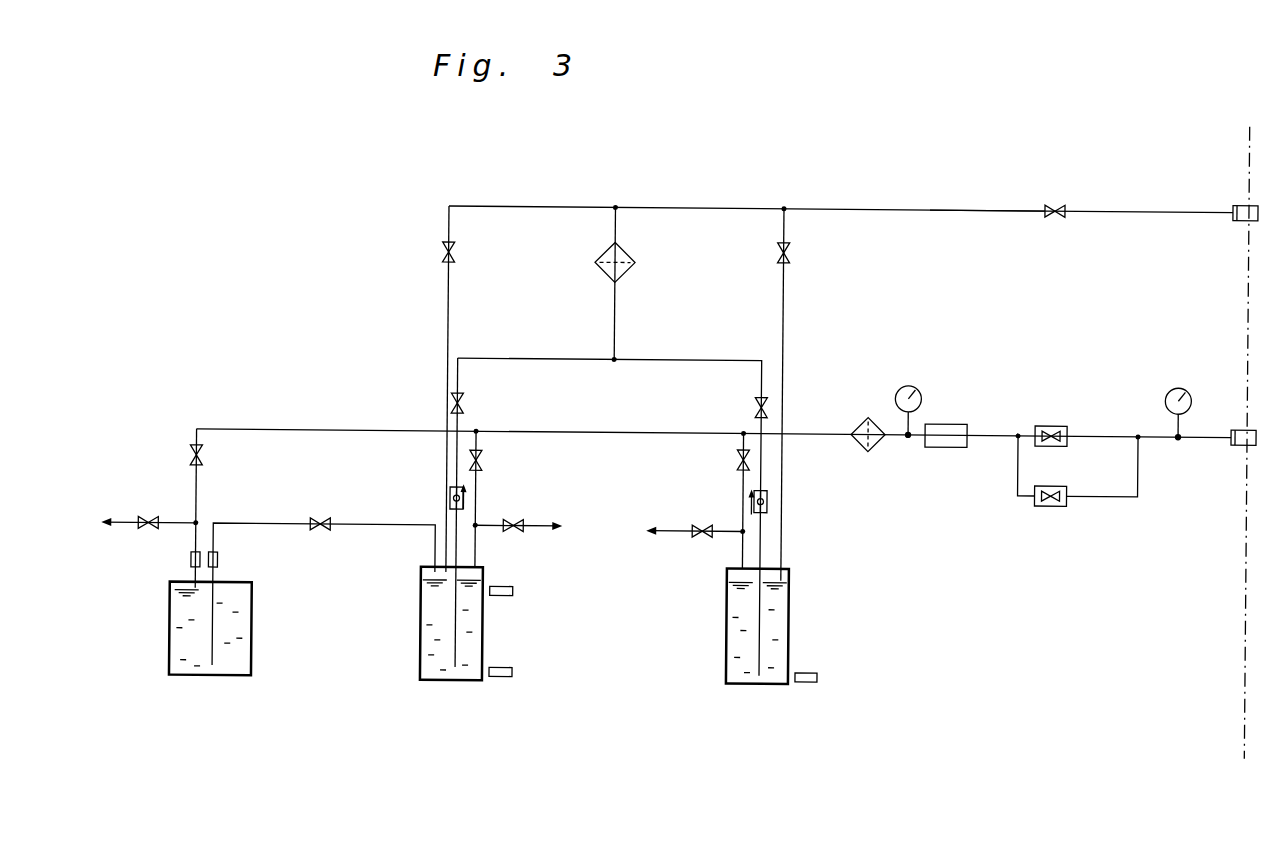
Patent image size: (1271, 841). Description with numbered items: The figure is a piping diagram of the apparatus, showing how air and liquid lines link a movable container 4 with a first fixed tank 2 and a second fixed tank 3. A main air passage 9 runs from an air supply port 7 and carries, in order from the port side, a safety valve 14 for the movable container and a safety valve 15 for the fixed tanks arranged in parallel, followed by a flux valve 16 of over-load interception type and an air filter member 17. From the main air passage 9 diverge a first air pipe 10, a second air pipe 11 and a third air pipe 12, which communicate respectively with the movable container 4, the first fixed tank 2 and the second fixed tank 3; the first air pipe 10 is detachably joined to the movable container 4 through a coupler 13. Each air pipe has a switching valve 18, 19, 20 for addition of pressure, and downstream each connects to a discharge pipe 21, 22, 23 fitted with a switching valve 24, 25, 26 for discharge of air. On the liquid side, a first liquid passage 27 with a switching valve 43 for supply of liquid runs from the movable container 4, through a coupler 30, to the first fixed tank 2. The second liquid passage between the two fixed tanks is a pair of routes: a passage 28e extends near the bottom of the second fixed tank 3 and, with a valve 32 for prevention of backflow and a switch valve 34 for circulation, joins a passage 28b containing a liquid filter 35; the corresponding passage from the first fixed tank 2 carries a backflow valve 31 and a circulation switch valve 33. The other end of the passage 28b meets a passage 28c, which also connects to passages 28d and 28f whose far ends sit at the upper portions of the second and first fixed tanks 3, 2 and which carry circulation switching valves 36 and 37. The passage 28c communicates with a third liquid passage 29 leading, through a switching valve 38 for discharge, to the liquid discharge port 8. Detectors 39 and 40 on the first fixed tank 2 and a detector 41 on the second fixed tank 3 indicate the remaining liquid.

The first fixed tank 2 is at (424, 620).
The second fixed tank 3 is at (730, 625).
The movable container 4 is at (255, 640).
The air supply port 7 is at (1238, 440).
The liquid discharge port 8 is at (1240, 199).
The main air passage 9 is at (633, 431).
The first air pipe 10 is at (199, 492).
The second air pipe 11 is at (478, 494).
The third air pipe 12 is at (745, 442).
The coupler 13 is at (194, 562).
The safety valve 14 is at (1053, 501).
The safety valve 15 is at (1053, 421).
The flux valve 16 is at (950, 443).
The air filter member 17 is at (878, 446).
The switching valve 18 is at (192, 450).
The switching valve 19 is at (484, 459).
The switching valve 20 is at (740, 468).
The discharge pipe 21 is at (120, 525).
The discharge pipe 22 is at (548, 526).
The discharge pipe 23 is at (672, 529).
The switching valve 24 is at (150, 518).
The switching valve 25 is at (512, 530).
The switching valve 26 is at (705, 535).
The first liquid passage 27 is at (276, 525).
The liquid passage 28b is at (616, 322).
The liquid passage 28c is at (672, 206).
The liquid passage 28d is at (784, 328).
The liquid passage 28e is at (730, 358).
The liquid passage 28f is at (449, 320).
The third liquid passage 29 is at (930, 206).
The coupler 30 is at (221, 562).
The valve 31 is at (452, 498).
The valve 32 is at (802, 532).
The switch valve 33 is at (488, 513).
The switch valve 34 is at (769, 404).
The liquid filter 35 is at (628, 252).
The circulation switching valve 36 is at (790, 250).
The circulation switching valve 37 is at (455, 252).
The switching valve 38 is at (1050, 204).
The detector 39 is at (516, 590).
The detector 40 is at (516, 671).
The detector 41 is at (821, 674).
The switching valve 43 is at (325, 517).